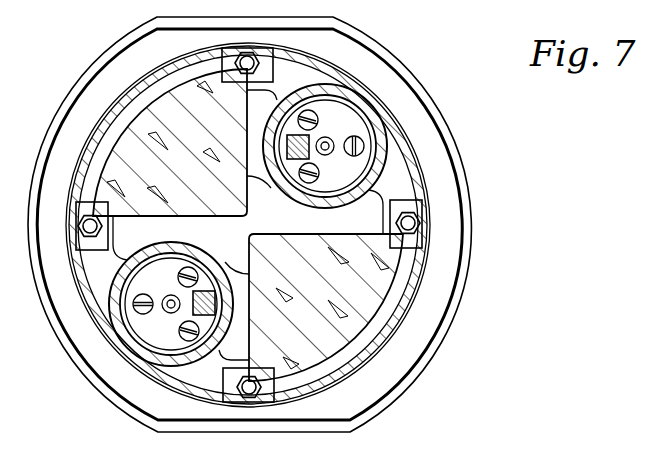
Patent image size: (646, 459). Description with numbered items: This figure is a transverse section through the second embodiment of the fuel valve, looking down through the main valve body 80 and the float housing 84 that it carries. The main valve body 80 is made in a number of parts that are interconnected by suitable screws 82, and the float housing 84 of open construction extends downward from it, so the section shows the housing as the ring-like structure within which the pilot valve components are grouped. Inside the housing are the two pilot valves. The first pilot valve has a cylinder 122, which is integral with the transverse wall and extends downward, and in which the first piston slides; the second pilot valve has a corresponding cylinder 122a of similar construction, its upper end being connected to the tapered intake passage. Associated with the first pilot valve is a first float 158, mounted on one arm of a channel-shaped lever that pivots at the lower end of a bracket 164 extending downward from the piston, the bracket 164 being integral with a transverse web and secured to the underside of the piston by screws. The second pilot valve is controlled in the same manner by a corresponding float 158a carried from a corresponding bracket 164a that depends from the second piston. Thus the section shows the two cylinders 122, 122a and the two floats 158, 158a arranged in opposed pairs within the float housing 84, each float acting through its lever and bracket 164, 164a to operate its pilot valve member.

The main valve body 80 is at (452, 122).
The screws 82 is at (84, 229).
The float housing 84 is at (97, 323).
The cylinder 122 is at (341, 128).
The cylinder 122a is at (150, 333).
The first float 158 is at (122, 147).
The float 158a is at (363, 305).
The bracket 164 is at (289, 160).
The bracket 164a is at (193, 316).